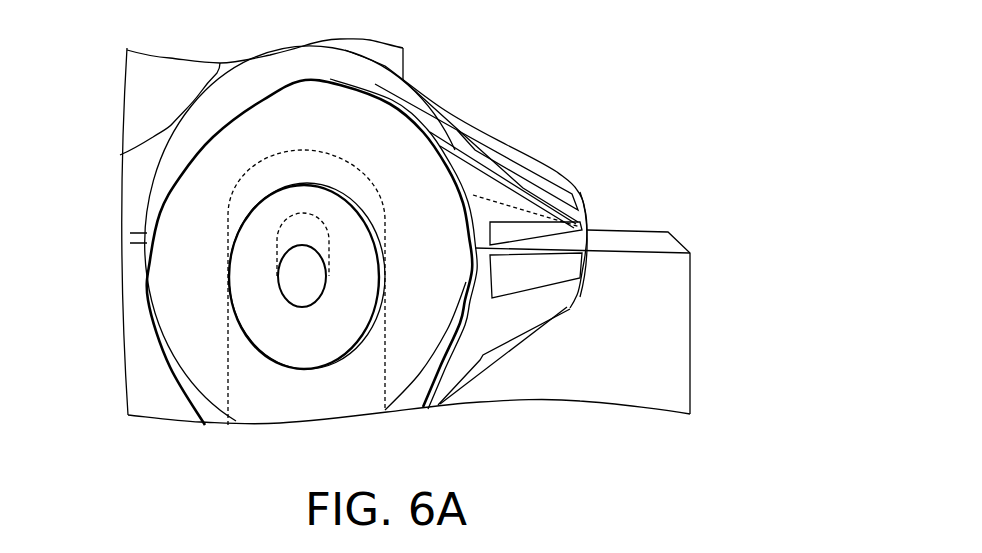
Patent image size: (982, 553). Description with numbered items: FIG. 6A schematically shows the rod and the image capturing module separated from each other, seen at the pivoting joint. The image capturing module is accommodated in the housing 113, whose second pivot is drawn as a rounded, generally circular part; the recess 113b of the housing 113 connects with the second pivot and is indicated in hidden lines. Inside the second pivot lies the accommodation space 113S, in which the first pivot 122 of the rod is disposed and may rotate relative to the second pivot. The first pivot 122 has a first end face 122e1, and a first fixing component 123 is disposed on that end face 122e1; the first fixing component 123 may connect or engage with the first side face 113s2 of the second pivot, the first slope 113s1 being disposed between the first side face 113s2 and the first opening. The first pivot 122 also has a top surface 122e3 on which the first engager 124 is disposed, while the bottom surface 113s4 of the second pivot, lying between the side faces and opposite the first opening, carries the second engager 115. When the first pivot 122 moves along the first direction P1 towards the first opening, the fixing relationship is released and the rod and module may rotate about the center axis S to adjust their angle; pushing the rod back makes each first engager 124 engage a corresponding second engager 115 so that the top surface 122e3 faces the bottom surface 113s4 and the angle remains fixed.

The housing 113 is at (627, 233).
The recess 113b is at (228, 362).
The accommodation space 113S is at (146, 400).
The first slope 113s1 is at (360, 182).
The first side face 113s2 is at (307, 210).
The bottom surface 113s4 is at (214, 106).
The second engager 115 is at (491, 156).
The first pivot 122 is at (140, 291).
The first end face 122e1 is at (280, 402).
The top surface 122e3 is at (453, 380).
The first fixing component 123 is at (243, 217).
The first engager 124 is at (533, 337).
The center axis S is at (303, 275).
The first direction P1 is at (98, 153).